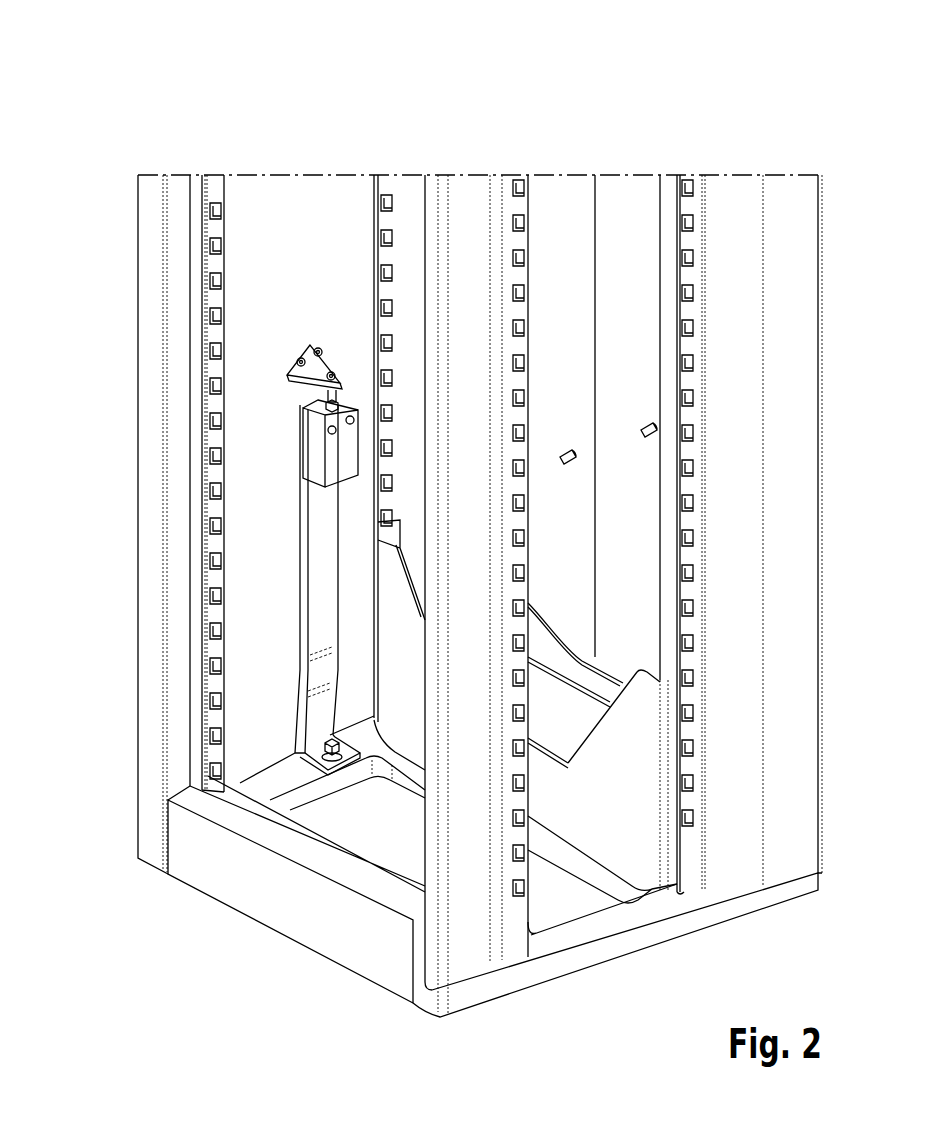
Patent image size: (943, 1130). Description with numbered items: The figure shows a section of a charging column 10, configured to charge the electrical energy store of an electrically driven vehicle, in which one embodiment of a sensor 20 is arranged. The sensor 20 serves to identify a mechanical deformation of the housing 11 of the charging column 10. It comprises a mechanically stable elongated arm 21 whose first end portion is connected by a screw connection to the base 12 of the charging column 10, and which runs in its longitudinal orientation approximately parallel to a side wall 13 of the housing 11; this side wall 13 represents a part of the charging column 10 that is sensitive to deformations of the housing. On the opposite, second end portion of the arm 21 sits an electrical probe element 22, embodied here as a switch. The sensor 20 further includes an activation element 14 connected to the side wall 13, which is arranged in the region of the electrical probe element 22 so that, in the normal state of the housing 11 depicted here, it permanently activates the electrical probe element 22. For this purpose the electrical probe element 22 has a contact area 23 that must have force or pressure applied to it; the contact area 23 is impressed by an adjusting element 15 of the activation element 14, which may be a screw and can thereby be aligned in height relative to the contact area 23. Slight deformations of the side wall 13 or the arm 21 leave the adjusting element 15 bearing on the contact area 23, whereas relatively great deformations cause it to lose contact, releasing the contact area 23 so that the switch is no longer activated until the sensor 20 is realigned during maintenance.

The charging column 10 is at (608, 80).
The housing 11 is at (146, 740).
The base 12 is at (668, 930).
The side wall 13 is at (296, 213).
The activation element 14 is at (303, 352).
The adjusting element 15 is at (322, 395).
The sensor 20 is at (207, 687).
The elongated arm 21 is at (205, 725).
The electrical probe element 22 is at (317, 465).
The contact area 23 is at (352, 397).